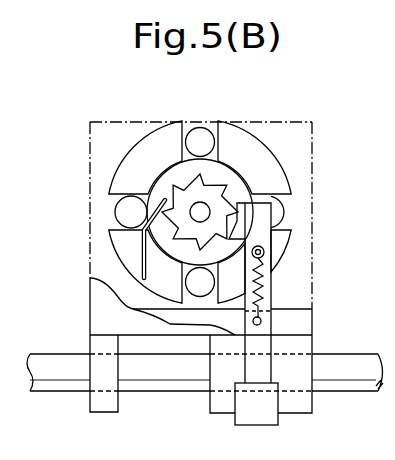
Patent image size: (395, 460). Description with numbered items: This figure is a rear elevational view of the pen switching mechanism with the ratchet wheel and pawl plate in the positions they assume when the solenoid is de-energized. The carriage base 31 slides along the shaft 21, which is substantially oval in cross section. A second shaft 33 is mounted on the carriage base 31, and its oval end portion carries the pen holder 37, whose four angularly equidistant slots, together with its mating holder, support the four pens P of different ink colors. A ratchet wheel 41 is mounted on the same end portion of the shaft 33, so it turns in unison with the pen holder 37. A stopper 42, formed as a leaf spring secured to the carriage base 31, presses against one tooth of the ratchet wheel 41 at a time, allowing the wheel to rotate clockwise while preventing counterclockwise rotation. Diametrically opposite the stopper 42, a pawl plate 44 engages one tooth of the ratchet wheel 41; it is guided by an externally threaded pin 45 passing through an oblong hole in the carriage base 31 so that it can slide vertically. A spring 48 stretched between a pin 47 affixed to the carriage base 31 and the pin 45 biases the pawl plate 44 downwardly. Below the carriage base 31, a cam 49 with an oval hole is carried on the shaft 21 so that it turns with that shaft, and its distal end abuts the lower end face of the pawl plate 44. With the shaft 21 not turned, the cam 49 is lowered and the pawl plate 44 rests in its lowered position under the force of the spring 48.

The shaft 21 is at (358, 397).
The carriage base 31 is at (313, 203).
The shaft 33 is at (203, 209).
The pen holder 37 is at (160, 142).
The ratchet wheel 41 is at (210, 181).
The stopper 42 is at (140, 250).
The pawl plate 44 is at (272, 285).
The externally threaded pin 45 is at (272, 253).
The pin 47 is at (262, 322).
The spring 48 is at (272, 303).
The cam 49 is at (262, 418).
The pen P is at (201, 127).